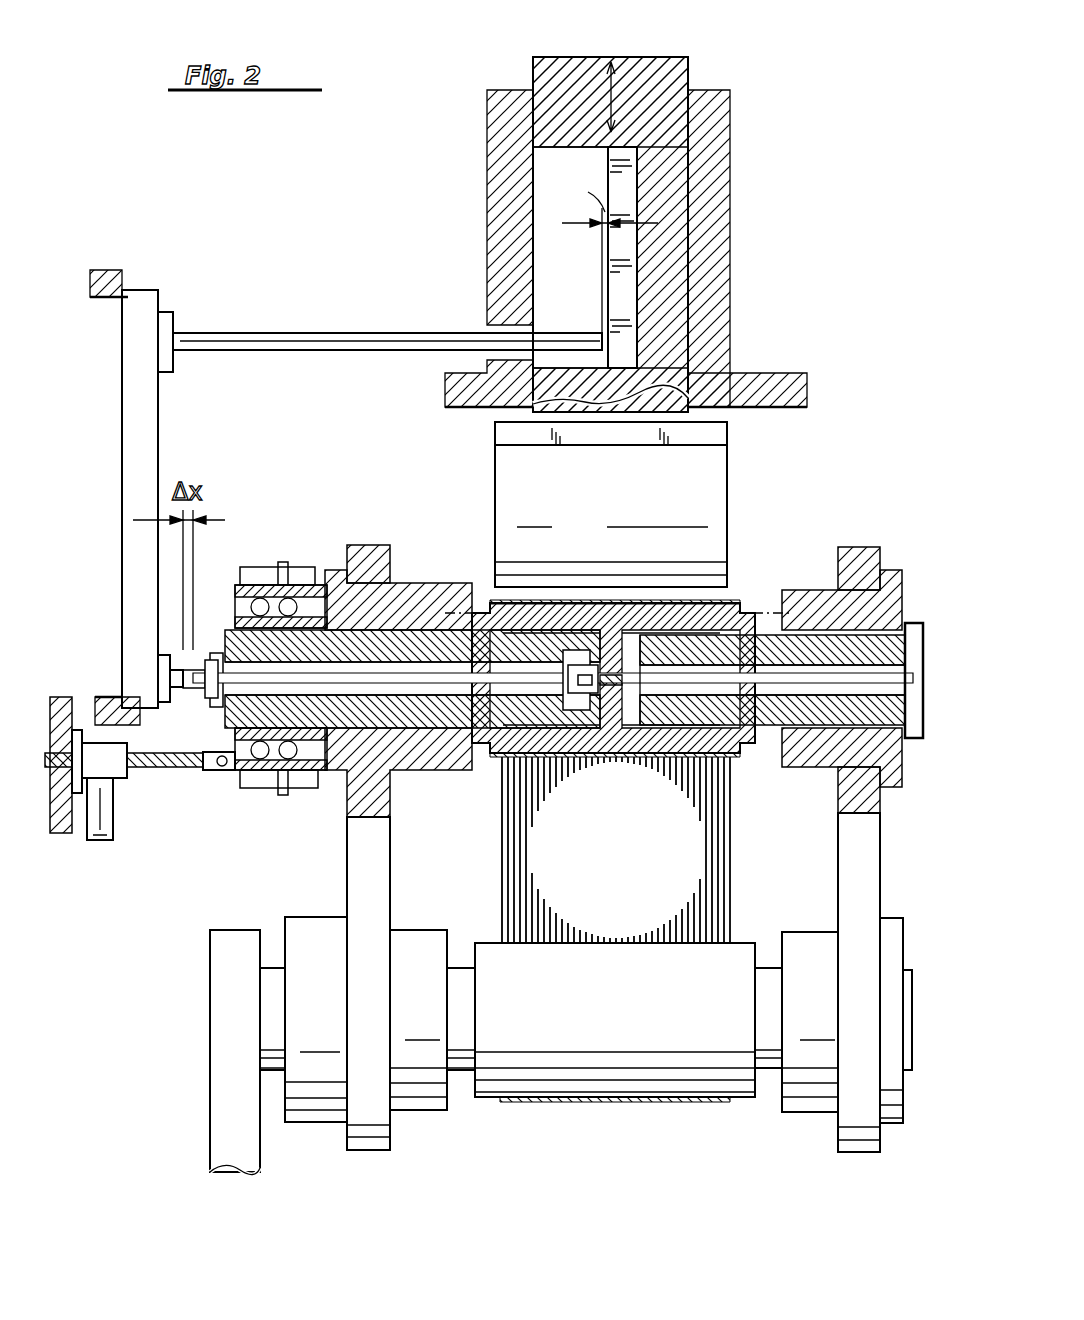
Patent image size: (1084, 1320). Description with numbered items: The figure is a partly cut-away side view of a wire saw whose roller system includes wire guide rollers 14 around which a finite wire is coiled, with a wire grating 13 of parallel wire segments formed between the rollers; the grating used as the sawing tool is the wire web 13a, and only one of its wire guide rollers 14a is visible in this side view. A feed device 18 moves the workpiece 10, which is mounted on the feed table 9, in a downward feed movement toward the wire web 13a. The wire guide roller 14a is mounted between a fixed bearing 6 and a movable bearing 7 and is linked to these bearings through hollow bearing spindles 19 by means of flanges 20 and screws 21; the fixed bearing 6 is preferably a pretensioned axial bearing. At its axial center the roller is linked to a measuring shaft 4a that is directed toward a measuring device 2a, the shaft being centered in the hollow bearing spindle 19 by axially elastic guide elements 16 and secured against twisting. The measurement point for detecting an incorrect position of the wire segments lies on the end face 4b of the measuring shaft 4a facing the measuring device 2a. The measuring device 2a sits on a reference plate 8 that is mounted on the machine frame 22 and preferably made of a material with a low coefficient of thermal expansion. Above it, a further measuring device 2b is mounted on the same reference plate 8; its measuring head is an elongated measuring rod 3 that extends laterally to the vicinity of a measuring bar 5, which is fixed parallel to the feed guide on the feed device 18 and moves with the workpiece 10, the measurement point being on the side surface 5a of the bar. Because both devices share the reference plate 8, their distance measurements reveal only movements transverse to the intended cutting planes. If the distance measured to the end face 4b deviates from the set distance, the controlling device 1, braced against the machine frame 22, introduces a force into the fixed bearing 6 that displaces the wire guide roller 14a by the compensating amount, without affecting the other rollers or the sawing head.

The controlling device 1 is at (155, 770).
The measuring device 2a is at (160, 660).
The further measuring device 2b is at (165, 320).
The measuring rod 3 is at (258, 342).
The measuring shaft 4a is at (425, 678).
The end face 4b is at (200, 690).
The measuring bar 5 is at (625, 242).
The side surface 5a is at (601, 285).
The fixed bearing 6 is at (288, 580).
The movable bearing 7 is at (820, 760).
The reference plate 8 is at (147, 430).
The feed table 9 is at (720, 438).
The workpiece 10 is at (715, 498).
The wire grating 13 is at (718, 900).
The wire web 13a is at (705, 600).
The wire guide rollers 14 is at (497, 1075).
The wire guide roller 14a is at (490, 605).
The axially elastic guide elements 16 is at (577, 660).
The feed device 18 is at (650, 72).
The bearing spindles 19 is at (360, 732).
The flanges 20 is at (475, 757).
The screws 21 is at (425, 752).
The machine frame 22 is at (62, 835).